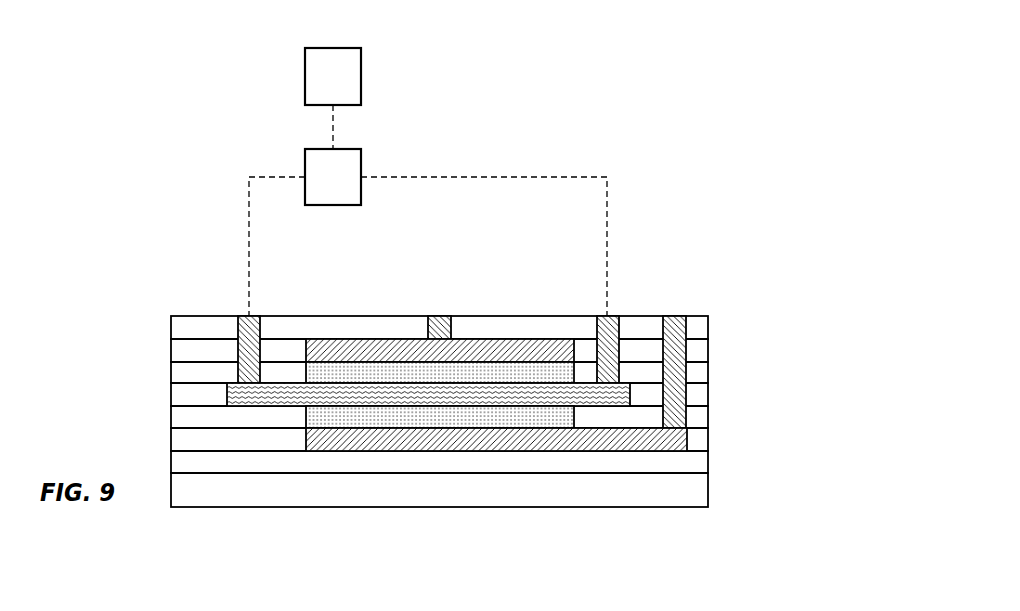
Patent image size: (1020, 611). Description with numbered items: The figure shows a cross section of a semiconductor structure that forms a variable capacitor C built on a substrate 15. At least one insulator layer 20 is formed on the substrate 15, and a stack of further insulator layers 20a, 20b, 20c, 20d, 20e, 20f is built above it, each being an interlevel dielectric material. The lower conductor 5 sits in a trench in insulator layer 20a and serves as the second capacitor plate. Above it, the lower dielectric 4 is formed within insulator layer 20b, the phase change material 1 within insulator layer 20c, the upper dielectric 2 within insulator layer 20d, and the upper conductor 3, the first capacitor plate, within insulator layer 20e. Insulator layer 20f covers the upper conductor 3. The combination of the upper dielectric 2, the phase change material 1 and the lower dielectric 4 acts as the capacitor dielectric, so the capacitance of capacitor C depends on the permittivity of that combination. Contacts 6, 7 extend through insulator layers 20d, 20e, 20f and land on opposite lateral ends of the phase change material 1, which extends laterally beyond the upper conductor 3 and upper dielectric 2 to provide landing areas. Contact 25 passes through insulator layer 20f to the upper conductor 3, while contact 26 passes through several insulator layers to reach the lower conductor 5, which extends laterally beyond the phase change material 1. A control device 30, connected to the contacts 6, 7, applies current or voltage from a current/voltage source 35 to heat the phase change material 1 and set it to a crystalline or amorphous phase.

The phase change material 1 is at (227, 396).
The upper dielectric 2 is at (306, 374).
The upper conductor 3 is at (339, 340).
The lower dielectric 4 is at (306, 410).
The lower conductor 5 is at (340, 452).
The contact 6 is at (240, 316).
The contact 7 is at (600, 316).
The contact 25 is at (440, 316).
The contact 26 is at (675, 316).
The control device 30 is at (321, 188).
The current/voltage source 35 is at (321, 88).
The substrate 15 is at (708, 483).
The insulator layer 20 is at (708, 462).
The insulator layer 20a is at (708, 438).
The insulator layer 20b is at (708, 417).
The insulator layer 20c is at (708, 393).
The insulator layer 20d is at (708, 372).
The insulator layer 20e is at (708, 348).
The insulator layer 20f is at (708, 327).
The variable capacitor C is at (173, 237).